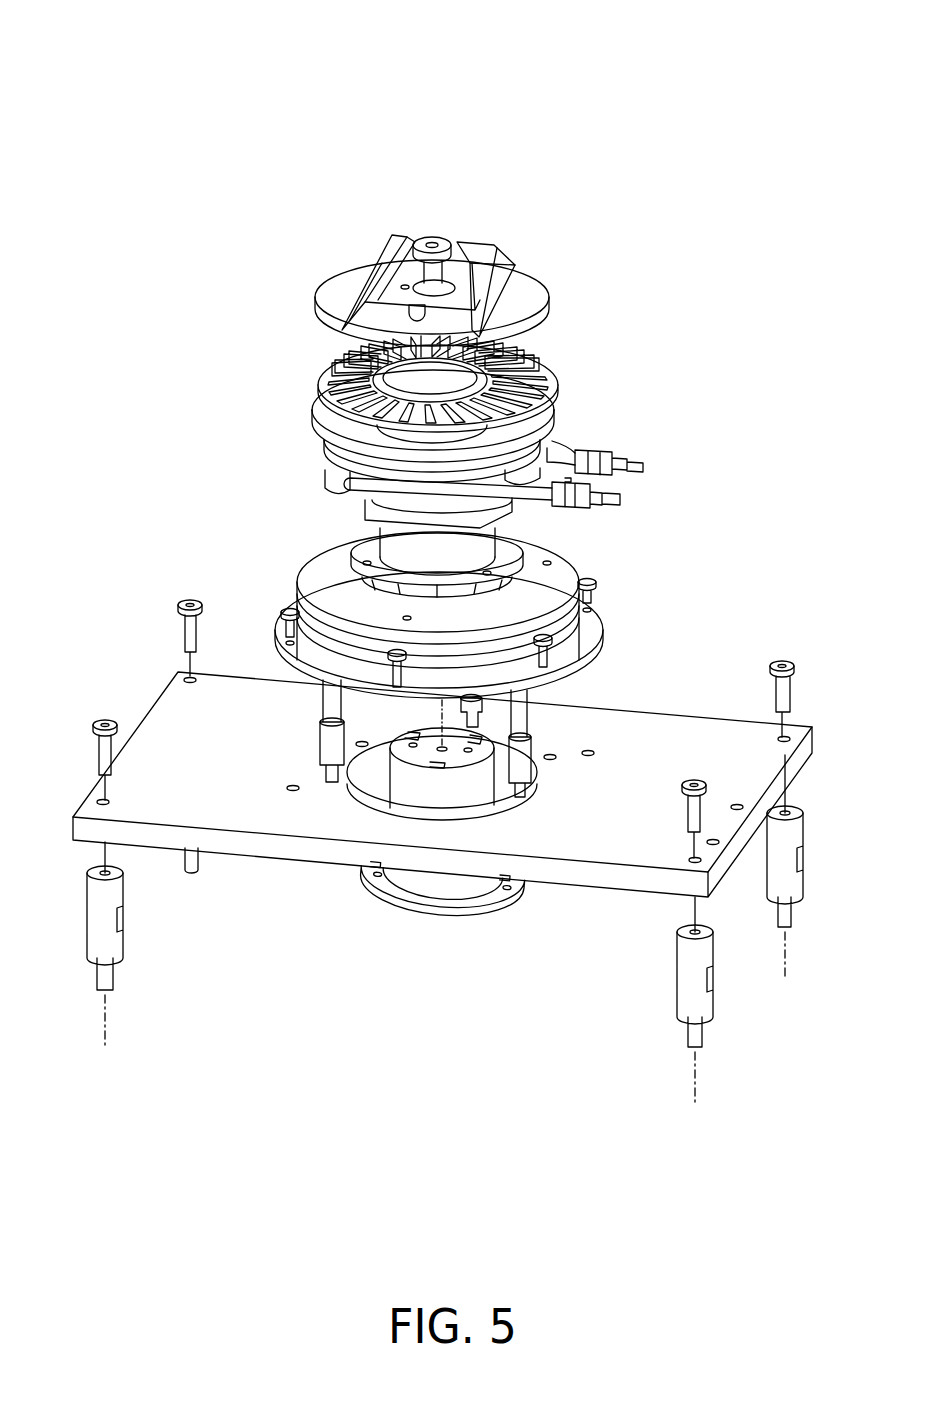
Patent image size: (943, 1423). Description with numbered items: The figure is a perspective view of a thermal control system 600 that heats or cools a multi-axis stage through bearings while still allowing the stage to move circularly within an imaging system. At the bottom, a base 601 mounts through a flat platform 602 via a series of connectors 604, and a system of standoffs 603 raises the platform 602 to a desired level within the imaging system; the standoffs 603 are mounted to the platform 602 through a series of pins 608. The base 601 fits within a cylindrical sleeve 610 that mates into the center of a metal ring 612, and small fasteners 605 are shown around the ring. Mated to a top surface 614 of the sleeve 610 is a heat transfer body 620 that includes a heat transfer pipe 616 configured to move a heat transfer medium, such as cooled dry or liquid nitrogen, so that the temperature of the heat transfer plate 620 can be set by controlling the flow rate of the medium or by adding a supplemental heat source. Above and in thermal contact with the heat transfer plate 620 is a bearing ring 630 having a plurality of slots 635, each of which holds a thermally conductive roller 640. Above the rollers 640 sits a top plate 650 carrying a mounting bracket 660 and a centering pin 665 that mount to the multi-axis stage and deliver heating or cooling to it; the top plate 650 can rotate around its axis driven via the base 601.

The thermal control system 600 is at (118, 92).
The base 601 is at (415, 893).
The platform 602 is at (172, 712).
The standoffs 603 is at (98, 940).
The connectors 604 is at (328, 755).
The screw 605 is at (323, 705).
The pins 608 is at (185, 598).
The cylindrical sleeve 610 is at (552, 541).
The metal ring 612 is at (600, 632).
The top surface 614 is at (363, 547).
The heat transfer pipe 616 is at (555, 442).
The heat transfer body 620 is at (325, 421).
The bearing ring 630 is at (552, 395).
The slots 635 is at (547, 375).
The thermally conductive rollers 640 is at (548, 343).
The top plate 650 is at (337, 292).
The mounting bracket 660 is at (497, 270).
The centering pin 665 is at (430, 238).